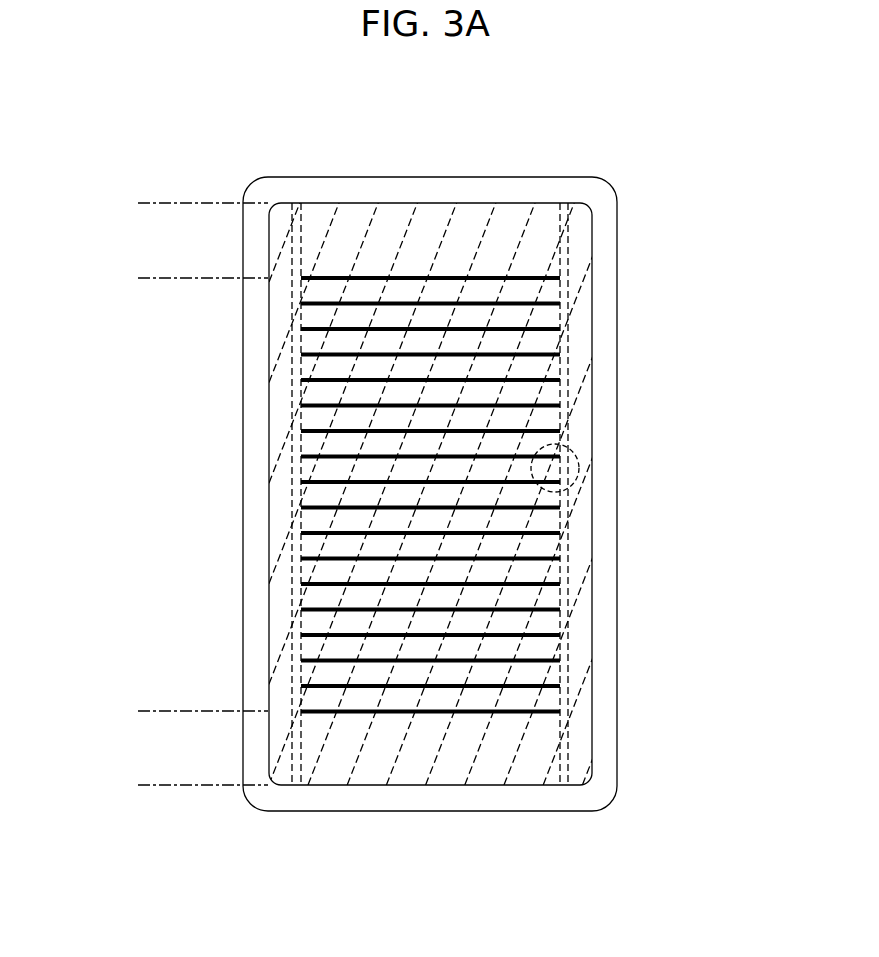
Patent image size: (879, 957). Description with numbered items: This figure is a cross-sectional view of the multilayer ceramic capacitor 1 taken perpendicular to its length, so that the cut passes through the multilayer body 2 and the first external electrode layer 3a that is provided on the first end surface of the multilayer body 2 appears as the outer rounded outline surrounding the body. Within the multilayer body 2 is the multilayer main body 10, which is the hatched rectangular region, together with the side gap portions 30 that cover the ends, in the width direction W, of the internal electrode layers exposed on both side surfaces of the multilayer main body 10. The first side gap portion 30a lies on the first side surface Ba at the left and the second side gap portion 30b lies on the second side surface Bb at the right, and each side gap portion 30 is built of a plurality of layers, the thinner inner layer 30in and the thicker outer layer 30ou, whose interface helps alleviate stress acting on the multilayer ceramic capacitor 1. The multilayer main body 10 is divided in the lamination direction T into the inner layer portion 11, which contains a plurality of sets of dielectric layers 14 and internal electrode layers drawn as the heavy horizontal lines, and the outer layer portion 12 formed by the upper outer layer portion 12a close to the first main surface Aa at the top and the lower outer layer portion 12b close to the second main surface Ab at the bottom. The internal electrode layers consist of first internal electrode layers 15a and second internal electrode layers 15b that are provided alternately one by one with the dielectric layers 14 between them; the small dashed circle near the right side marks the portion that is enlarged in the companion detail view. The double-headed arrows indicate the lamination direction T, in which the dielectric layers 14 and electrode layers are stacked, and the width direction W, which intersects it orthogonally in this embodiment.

The multilayer ceramic capacitor 1 is at (638, 110).
The multilayer body 2 is at (597, 116).
The first external electrode layer 3a is at (422, 186).
The multilayer main body 10 is at (483, 205).
The inner layer portion 11 is at (134, 278).
The outer layer portion 12 is at (165, 497).
The upper outer layer portion 12a is at (134, 203).
The lower outer layer portion 12b is at (134, 711).
The dielectric layer 14 is at (553, 703).
The first internal electrode layer 15a is at (546, 457).
The second internal electrode layer 15b is at (546, 483).
The side gap portion 30 is at (403, 477).
The first side gap portion 30a is at (278, 215).
The second side gap portion 30b is at (585, 212).
The outer layer 30ou is at (272, 758).
The inner layer 30in is at (297, 786).
The first main surface Aa is at (353, 190).
The second main surface Ab is at (412, 812).
The first side surface Ba is at (268, 565).
The second side surface Bb is at (592, 565).
The lamination direction T is at (765, 293).
The width direction W is at (327, 902).